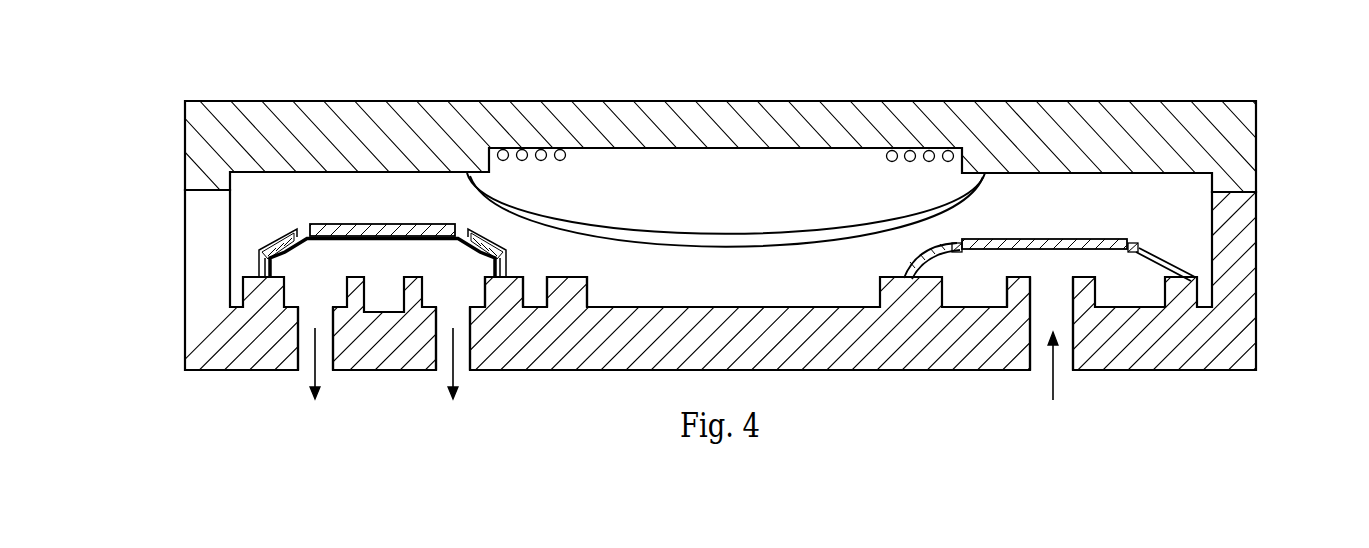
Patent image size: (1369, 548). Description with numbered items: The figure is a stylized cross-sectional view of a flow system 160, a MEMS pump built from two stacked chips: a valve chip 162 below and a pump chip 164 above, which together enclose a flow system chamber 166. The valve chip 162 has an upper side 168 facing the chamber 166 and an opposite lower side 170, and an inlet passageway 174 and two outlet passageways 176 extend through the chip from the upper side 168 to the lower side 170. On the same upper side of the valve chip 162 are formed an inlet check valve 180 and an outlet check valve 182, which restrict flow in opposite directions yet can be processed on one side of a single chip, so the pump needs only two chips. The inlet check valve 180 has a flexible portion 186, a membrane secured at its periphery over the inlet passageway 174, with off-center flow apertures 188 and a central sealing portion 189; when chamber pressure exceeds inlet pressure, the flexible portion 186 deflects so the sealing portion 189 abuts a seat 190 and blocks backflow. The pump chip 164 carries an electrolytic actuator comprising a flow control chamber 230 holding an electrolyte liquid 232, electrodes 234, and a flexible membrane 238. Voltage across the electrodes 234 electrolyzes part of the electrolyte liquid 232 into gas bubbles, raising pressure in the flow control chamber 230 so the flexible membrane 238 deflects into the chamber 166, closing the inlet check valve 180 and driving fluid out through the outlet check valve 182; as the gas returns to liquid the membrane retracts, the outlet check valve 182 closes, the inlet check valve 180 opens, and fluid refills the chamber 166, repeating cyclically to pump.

The flow system 160 is at (519, 61).
The valve chip 162 is at (1252, 288).
The pump chip 164 is at (1250, 146).
The flow system chamber 166 is at (742, 283).
The upper side 168 is at (574, 277).
The lower side 170 is at (628, 371).
The inlet passageway 174 is at (1073, 371).
The outlet passageway 176 is at (333, 371).
The inlet check valve 180 is at (1036, 243).
The outlet check valve 182 is at (354, 210).
The flexible portion 186 is at (1043, 240).
The flow apertures 188 is at (950, 246).
The sealing portion 189 is at (1036, 250).
The seat 190 is at (1012, 277).
The flow control chamber 230 is at (735, 176).
The electrolyte liquid 232 is at (742, 202).
The electrodes 234 is at (777, 174).
The flexible membrane 238 is at (807, 248).